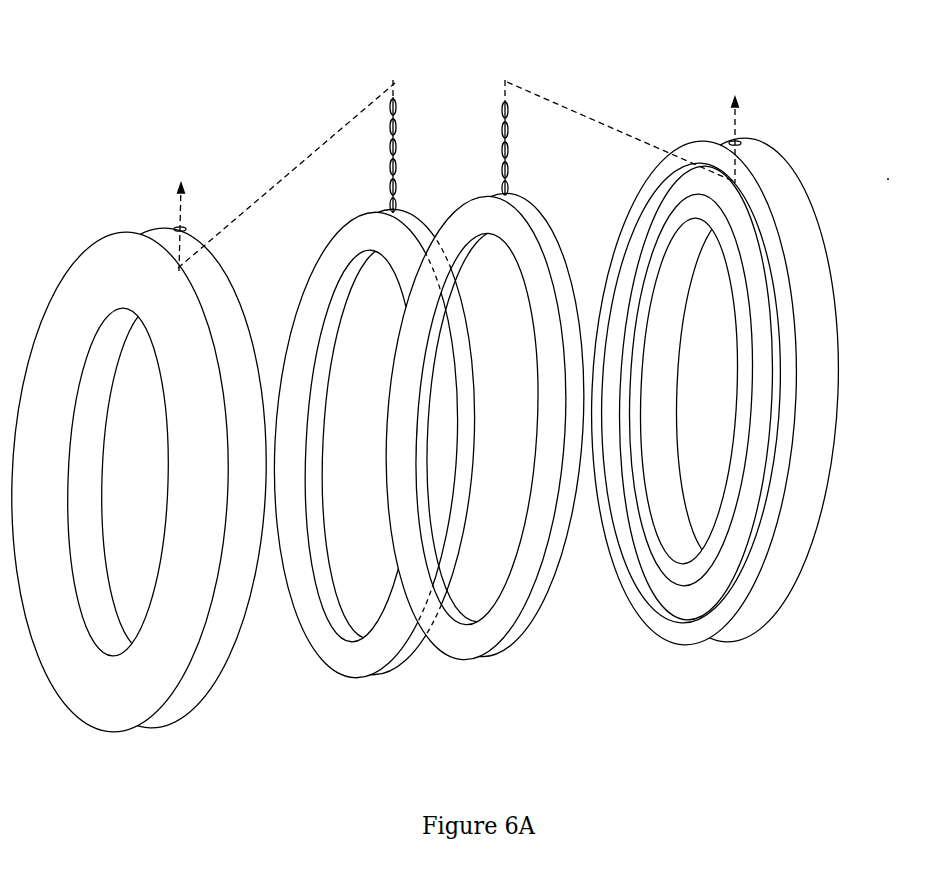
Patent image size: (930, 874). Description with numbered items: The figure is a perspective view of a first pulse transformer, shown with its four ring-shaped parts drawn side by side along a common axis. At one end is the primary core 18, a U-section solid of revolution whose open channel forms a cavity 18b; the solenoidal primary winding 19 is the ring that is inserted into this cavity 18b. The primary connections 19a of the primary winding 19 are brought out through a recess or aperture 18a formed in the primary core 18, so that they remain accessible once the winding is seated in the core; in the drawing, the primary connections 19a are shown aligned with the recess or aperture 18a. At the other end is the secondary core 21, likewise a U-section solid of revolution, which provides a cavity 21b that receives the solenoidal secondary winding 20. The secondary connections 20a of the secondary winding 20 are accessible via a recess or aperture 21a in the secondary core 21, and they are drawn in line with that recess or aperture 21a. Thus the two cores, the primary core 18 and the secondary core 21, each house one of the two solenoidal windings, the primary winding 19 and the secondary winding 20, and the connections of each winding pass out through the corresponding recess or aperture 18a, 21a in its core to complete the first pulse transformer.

The primary core 18 is at (199, 419).
The recess or aperture 18a is at (192, 222).
The cavity 18b is at (232, 676).
The primary winding 19 is at (352, 220).
The primary connections 19a is at (400, 118).
The secondary winding 20 is at (548, 217).
The secondary connections 20a is at (500, 124).
The secondary core 21 is at (710, 366).
The recess or aperture 21a is at (750, 147).
The cavity 21b is at (678, 598).